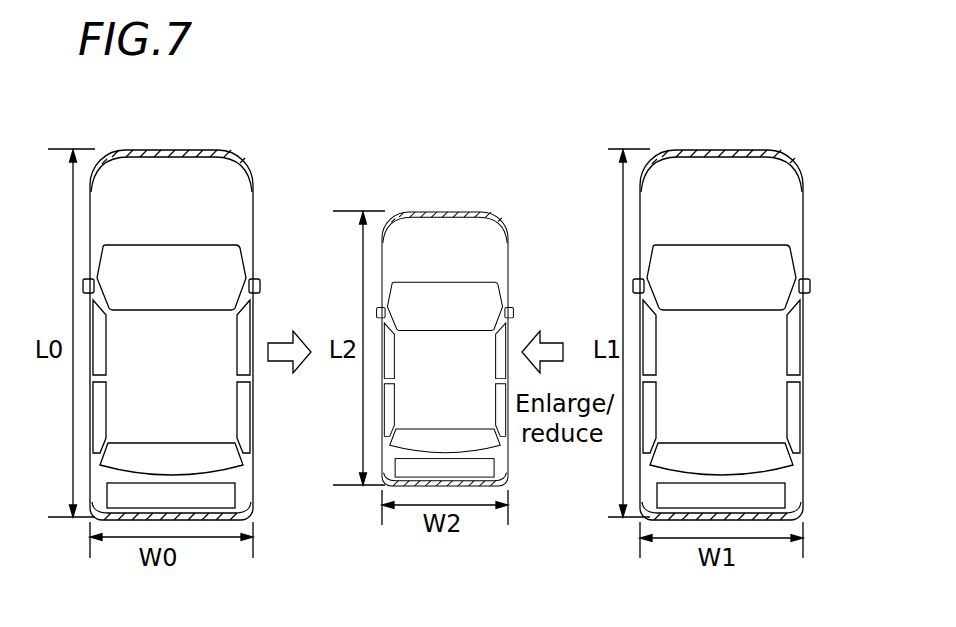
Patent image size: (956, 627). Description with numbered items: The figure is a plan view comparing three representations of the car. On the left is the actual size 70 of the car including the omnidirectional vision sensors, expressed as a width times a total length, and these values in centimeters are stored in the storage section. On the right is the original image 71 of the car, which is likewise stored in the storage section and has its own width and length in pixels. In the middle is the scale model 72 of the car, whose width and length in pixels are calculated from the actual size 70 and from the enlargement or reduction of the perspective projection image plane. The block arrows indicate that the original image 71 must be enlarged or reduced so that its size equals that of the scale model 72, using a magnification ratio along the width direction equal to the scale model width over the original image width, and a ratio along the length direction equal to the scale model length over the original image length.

The actual size of the car 70 is at (204, 149).
The original image of the car 71 is at (722, 148).
The scale model of the car 72 is at (447, 211).